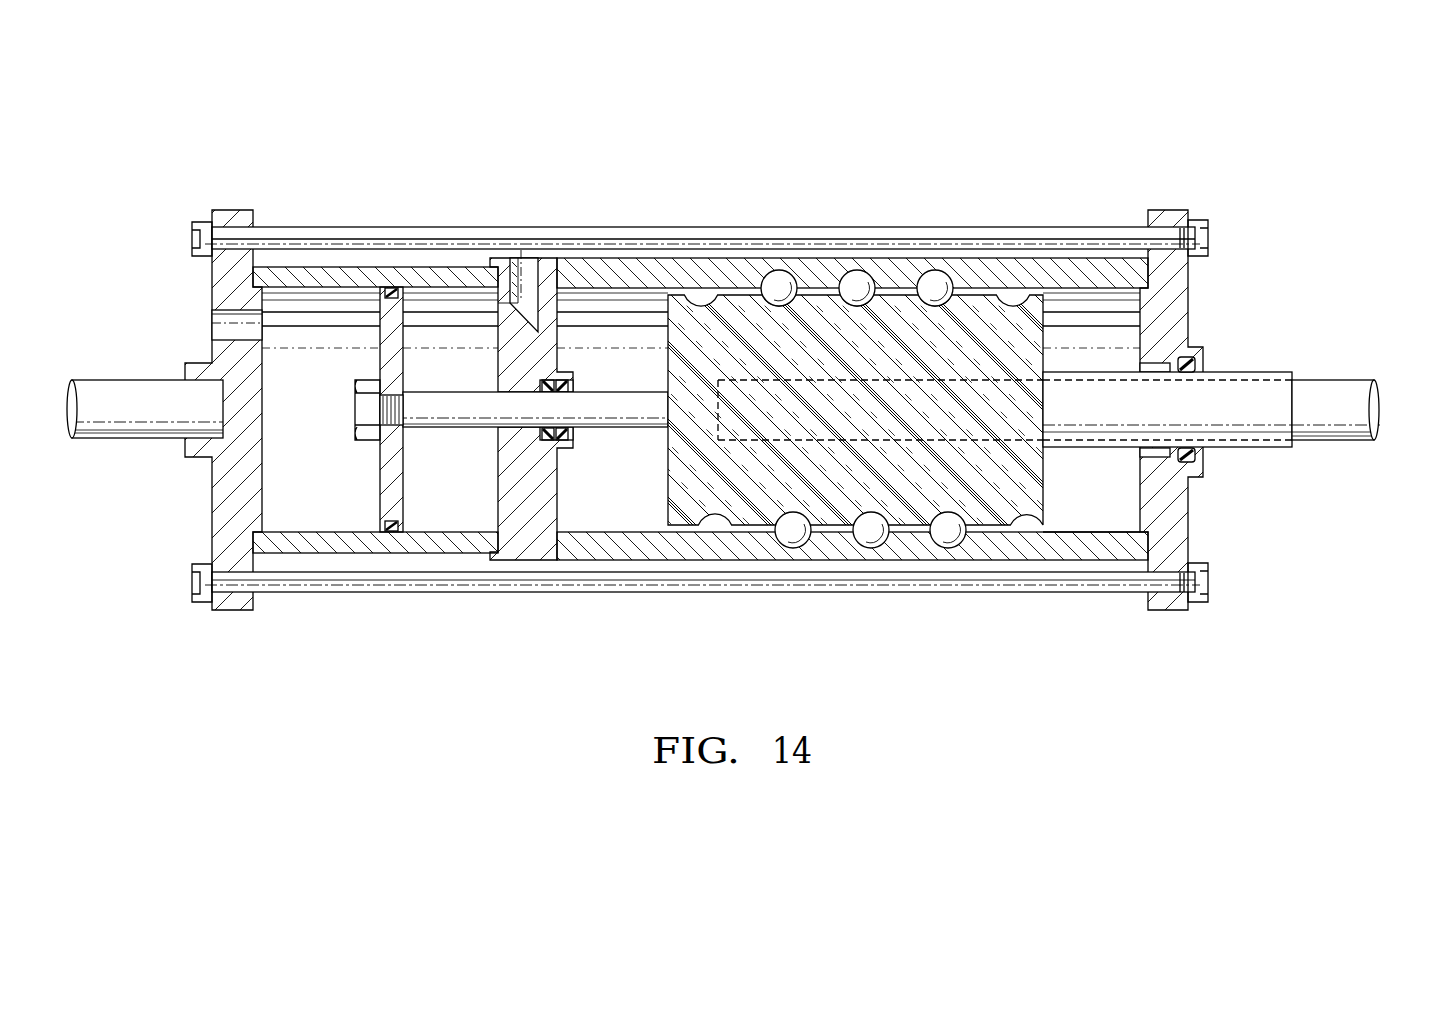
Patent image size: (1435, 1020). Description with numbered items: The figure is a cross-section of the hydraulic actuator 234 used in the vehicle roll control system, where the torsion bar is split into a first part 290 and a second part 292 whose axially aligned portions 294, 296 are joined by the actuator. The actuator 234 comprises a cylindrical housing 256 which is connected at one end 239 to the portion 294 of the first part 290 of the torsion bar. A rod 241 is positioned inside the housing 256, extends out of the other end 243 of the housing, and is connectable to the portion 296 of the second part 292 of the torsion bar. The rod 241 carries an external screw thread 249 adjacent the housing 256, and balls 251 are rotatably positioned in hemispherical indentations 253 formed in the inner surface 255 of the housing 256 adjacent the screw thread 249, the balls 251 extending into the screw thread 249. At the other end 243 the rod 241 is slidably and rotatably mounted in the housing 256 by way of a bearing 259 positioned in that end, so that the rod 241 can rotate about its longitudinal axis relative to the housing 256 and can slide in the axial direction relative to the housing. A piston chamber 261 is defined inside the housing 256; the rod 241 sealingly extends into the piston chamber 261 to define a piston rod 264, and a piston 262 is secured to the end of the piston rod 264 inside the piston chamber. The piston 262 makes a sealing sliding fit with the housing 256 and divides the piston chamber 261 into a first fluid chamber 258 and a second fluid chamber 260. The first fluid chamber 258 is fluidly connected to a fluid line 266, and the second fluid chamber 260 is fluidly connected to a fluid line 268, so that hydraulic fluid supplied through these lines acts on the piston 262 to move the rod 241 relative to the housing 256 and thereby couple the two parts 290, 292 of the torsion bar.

The hydraulic actuator 234 is at (908, 203).
The one end of the housing 239 is at (218, 515).
The rod 241 is at (867, 411).
The other end of the housing 243 is at (1183, 510).
The external screw thread 249 is at (772, 503).
The balls 251 is at (873, 533).
The hemispherical indentations 253 is at (958, 543).
The inner surface 255 is at (1080, 524).
The cylindrical housing 256 is at (604, 561).
The first fluid chamber 258 is at (312, 305).
The bearing 259 is at (1193, 357).
The second fluid chamber 260 is at (455, 307).
The piston chamber 261 is at (350, 511).
The piston 262 is at (378, 308).
The piston rod 264 is at (437, 430).
The fluid line 266 is at (213, 332).
The fluid line 268 is at (528, 261).
The first part of the torsion bar 290 is at (127, 443).
The second part of the torsion bar 292 is at (1329, 452).
The portion of the first part 294 is at (133, 387).
The portion of the second part 296 is at (1320, 388).